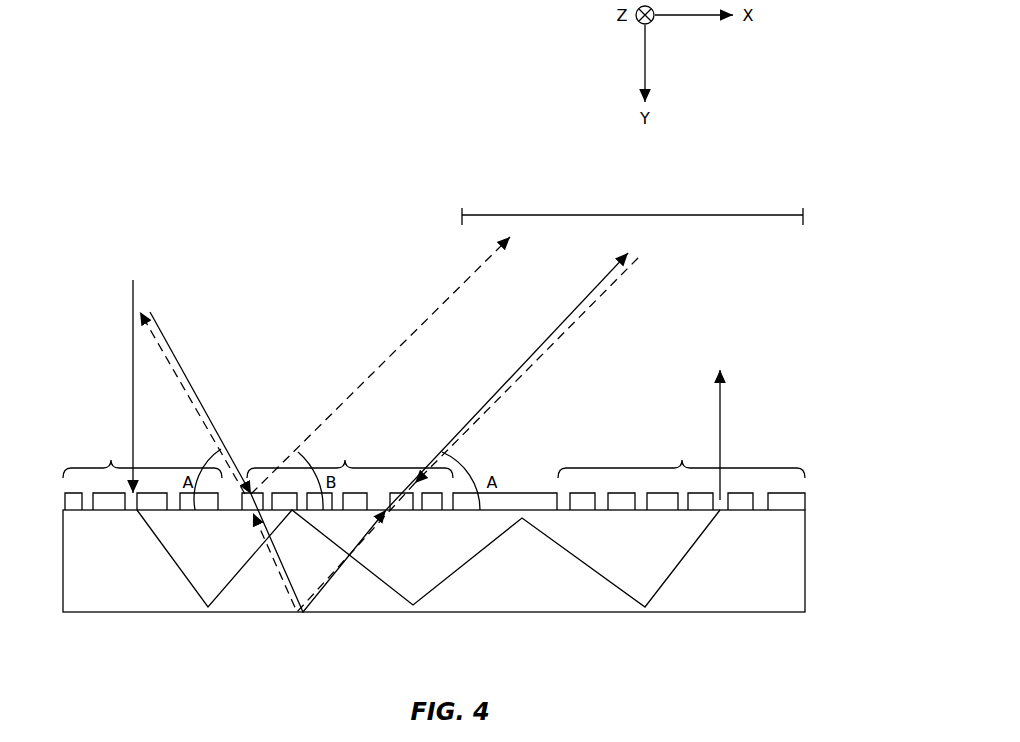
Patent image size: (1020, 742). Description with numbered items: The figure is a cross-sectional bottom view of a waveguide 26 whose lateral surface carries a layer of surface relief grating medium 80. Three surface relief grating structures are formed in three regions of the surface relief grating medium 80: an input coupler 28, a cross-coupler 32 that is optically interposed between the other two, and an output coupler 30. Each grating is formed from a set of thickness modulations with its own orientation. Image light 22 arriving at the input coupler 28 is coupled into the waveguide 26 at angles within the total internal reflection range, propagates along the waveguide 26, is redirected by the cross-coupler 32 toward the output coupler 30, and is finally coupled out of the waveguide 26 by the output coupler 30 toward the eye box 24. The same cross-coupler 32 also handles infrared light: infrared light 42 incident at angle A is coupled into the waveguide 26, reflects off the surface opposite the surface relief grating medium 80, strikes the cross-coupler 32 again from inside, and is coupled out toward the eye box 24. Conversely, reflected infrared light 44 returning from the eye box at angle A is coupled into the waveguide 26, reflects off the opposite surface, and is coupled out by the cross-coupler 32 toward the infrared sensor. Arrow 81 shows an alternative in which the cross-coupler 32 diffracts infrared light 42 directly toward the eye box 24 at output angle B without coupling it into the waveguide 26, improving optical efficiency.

The image light 22 is at (133, 388).
The eye box 24 is at (556, 215).
The waveguide 26 is at (797, 583).
The input coupler 28 is at (142, 455).
The output coupler 30 is at (681, 456).
The cross-coupler 32 is at (350, 455).
The infrared light 42 is at (192, 387).
The reflected infrared light 44 is at (210, 433).
The surface relief grating medium 80 is at (809, 483).
The arrow 81 is at (452, 296).